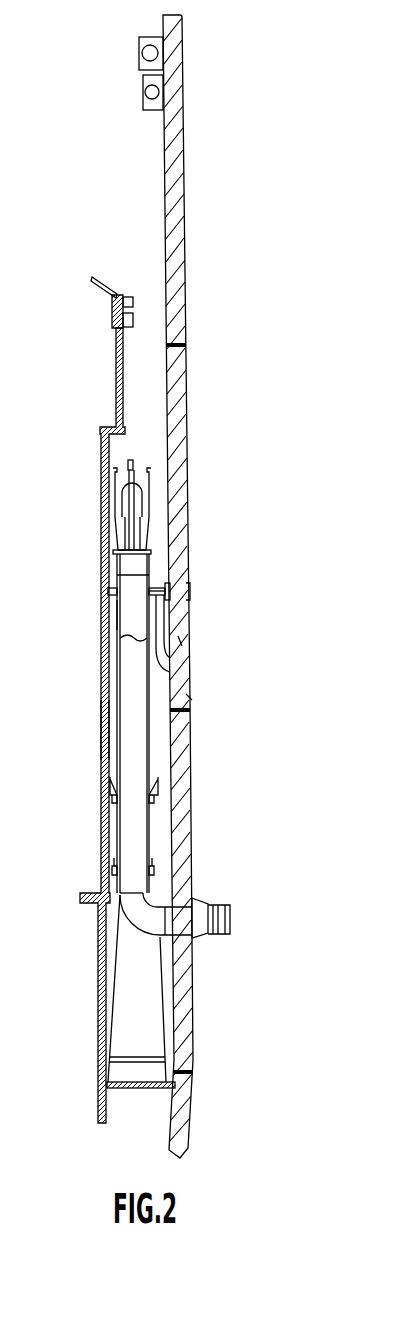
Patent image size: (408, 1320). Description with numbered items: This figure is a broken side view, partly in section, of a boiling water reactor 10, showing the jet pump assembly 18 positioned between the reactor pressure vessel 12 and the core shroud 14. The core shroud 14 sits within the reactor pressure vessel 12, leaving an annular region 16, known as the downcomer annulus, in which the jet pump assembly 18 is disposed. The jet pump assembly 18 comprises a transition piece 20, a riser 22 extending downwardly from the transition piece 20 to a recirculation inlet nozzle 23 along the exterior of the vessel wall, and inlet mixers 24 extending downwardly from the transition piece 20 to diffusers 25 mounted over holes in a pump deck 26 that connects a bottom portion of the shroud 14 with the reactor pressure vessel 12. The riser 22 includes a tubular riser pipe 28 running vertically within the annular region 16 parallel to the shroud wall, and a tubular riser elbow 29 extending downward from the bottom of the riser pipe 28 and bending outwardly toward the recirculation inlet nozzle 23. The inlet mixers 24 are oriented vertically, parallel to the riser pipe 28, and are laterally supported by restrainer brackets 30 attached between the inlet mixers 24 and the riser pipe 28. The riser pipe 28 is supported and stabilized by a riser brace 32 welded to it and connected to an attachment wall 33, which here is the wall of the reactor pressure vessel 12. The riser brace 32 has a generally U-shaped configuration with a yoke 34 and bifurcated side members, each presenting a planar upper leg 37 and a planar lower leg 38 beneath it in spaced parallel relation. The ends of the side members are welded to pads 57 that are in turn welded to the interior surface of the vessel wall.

The boiling water reactor 10 is at (198, 78).
The reactor pressure vessel 12 is at (186, 281).
The core shroud 14 is at (100, 535).
The annular region 16 is at (163, 762).
The jet pump assembly 18 is at (152, 531).
The transition piece 20 is at (137, 503).
The riser 22 is at (110, 720).
The recirculation inlet nozzle 23 is at (208, 902).
The inlet mixers 24 is at (117, 615).
The diffusers 25 is at (163, 995).
The pump deck 26 is at (142, 1090).
The riser pipe 28 is at (192, 698).
The riser elbow 29 is at (133, 923).
The restrainer brackets 30 is at (158, 787).
The riser brace 32 is at (157, 581).
The attachment wall 33 is at (184, 642).
The yoke 34 is at (102, 590).
The upper leg 37 is at (167, 584).
The lower leg 38 is at (150, 678).
The pads 57 is at (188, 587).